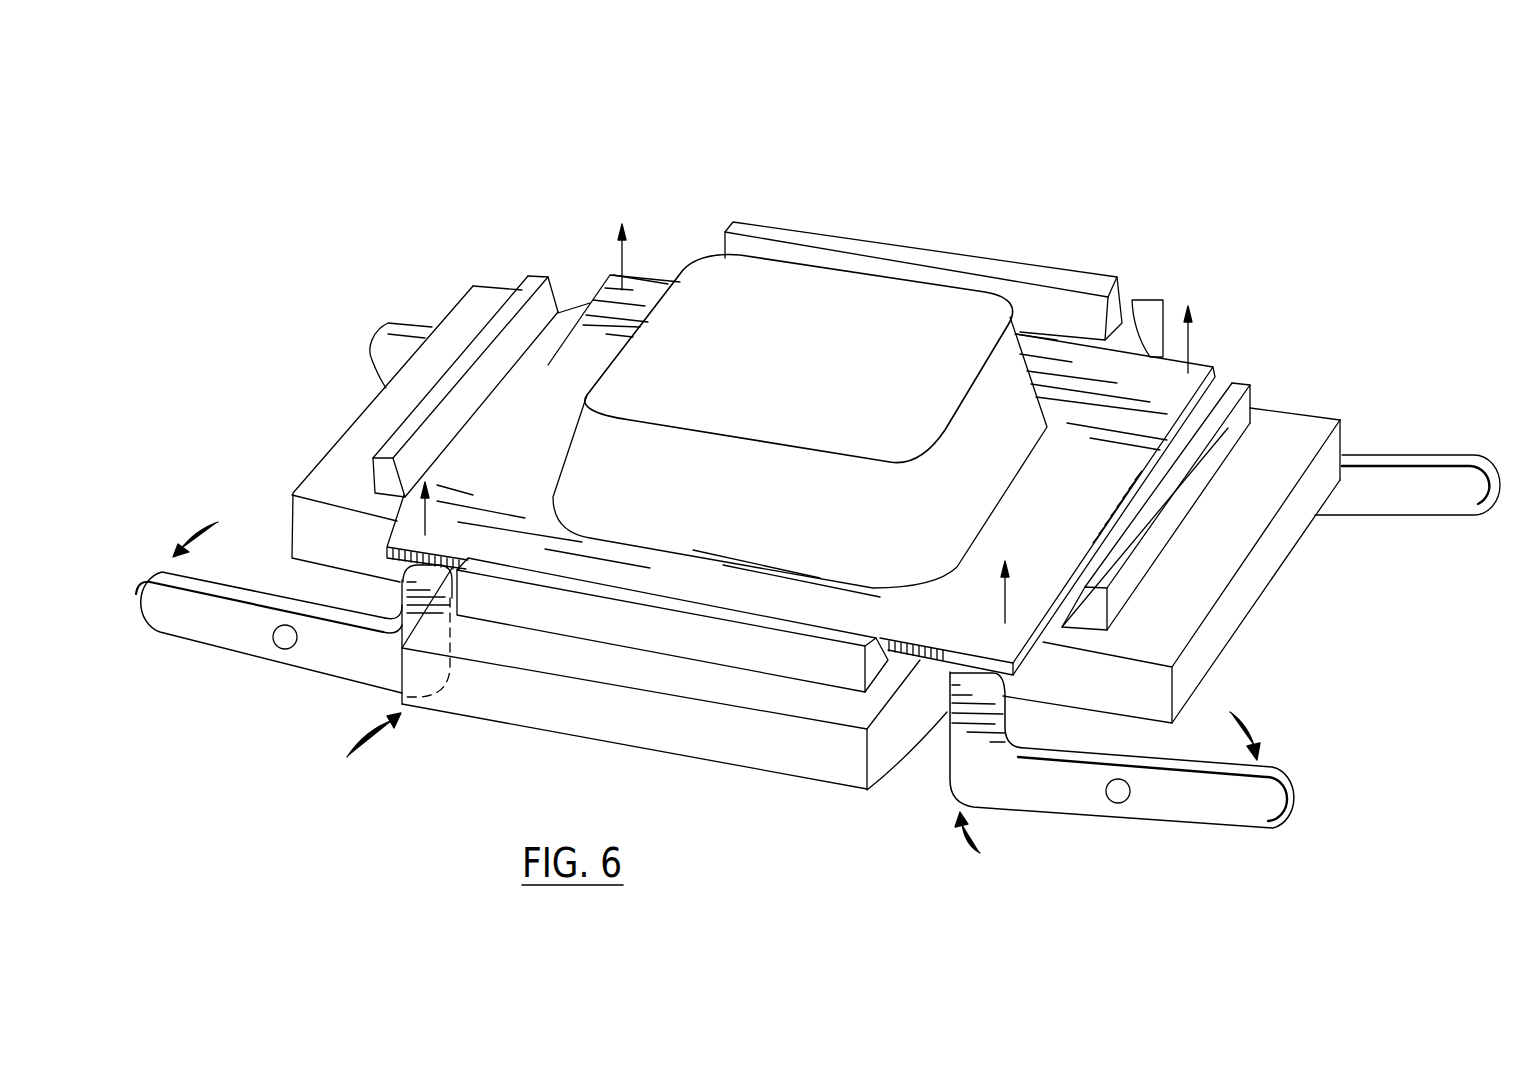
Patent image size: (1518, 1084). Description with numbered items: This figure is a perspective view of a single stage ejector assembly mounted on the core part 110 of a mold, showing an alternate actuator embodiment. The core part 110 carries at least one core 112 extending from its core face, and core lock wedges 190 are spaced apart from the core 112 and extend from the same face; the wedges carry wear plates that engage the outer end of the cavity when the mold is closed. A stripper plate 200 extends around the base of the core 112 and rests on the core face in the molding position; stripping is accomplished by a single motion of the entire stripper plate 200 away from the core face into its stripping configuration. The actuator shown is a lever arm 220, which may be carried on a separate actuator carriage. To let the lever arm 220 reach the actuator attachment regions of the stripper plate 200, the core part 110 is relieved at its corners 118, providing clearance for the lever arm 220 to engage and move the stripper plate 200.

The core part 110 is at (592, 700).
The core 112 is at (782, 372).
The corners 118 is at (652, 252).
The core lock wedges 190 is at (408, 430).
The stripper plate 200 is at (578, 348).
The lever arm 220 is at (403, 343).